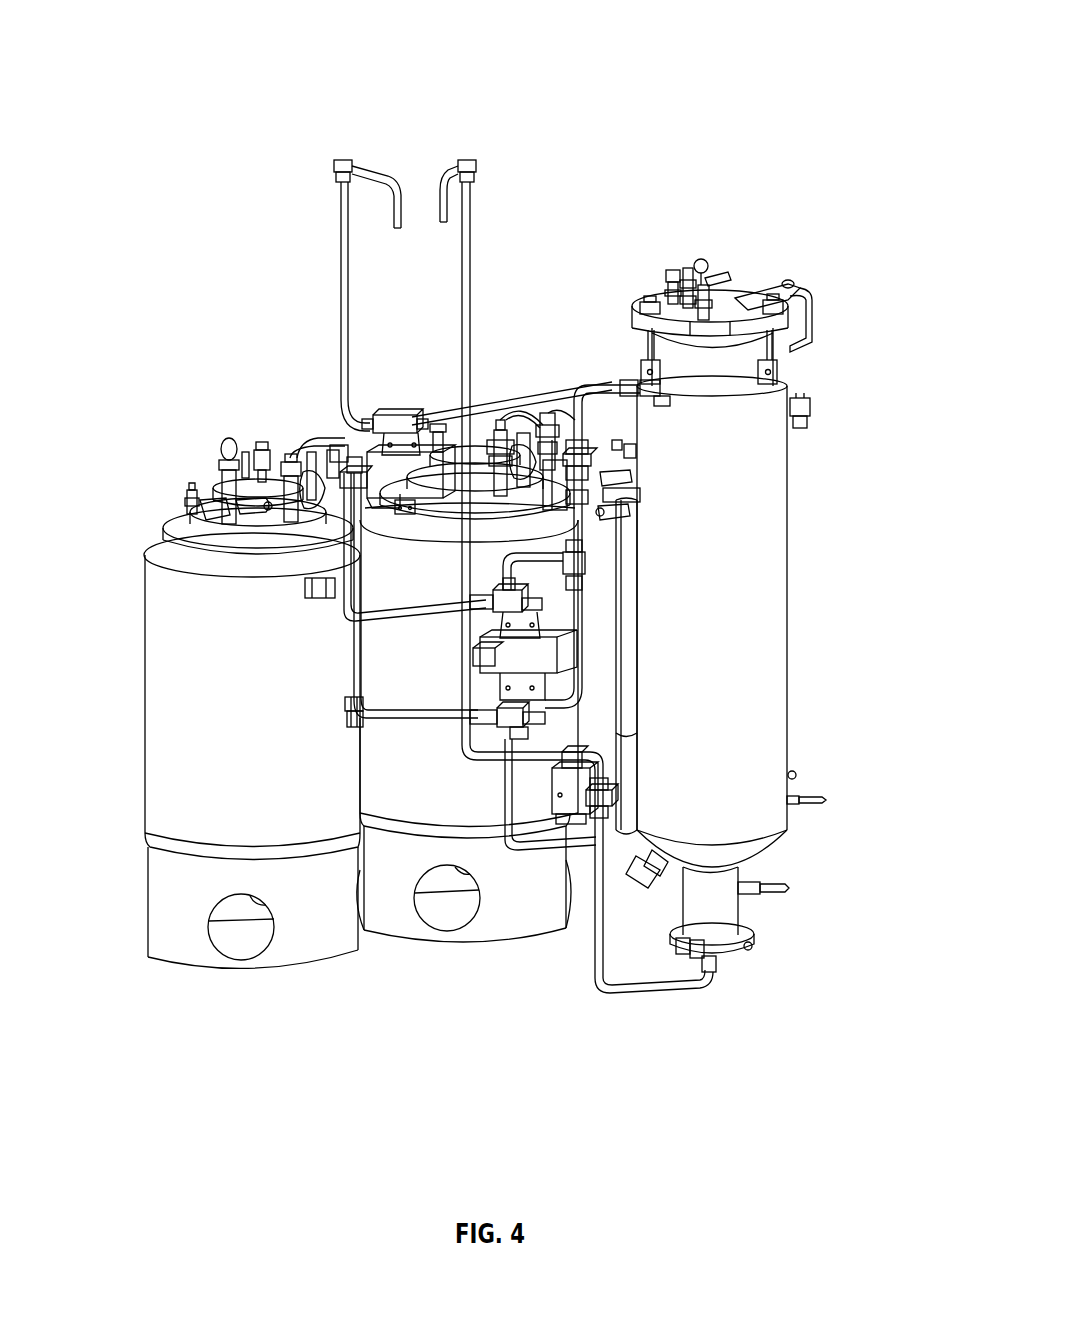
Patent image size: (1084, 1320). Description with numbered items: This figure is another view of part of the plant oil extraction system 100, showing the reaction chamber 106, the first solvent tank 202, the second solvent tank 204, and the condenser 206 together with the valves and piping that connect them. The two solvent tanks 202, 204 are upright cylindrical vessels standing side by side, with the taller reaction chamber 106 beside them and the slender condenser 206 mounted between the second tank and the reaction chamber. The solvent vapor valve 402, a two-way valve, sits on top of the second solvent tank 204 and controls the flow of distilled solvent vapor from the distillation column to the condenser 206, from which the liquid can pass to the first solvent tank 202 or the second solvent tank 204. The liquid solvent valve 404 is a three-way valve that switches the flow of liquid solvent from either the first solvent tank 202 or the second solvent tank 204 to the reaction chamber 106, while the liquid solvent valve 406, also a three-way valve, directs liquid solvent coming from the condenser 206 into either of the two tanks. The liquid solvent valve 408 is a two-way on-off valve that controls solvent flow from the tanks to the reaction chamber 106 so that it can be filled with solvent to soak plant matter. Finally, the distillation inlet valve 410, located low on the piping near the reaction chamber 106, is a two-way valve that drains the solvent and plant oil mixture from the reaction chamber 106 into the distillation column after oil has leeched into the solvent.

The plant oil extraction system 100 is at (838, 64).
The reaction chamber 106 is at (752, 572).
The first solvent tank 202 is at (178, 602).
The second solvent tank 204 is at (441, 792).
The condenser 206 is at (628, 668).
The solvent vapor valve 402 is at (402, 416).
The liquid solvent valve 404 is at (514, 618).
The liquid solvent valve 406 is at (512, 720).
The liquid solvent valve 408 is at (580, 474).
The distillation inlet valve 410 is at (606, 808).